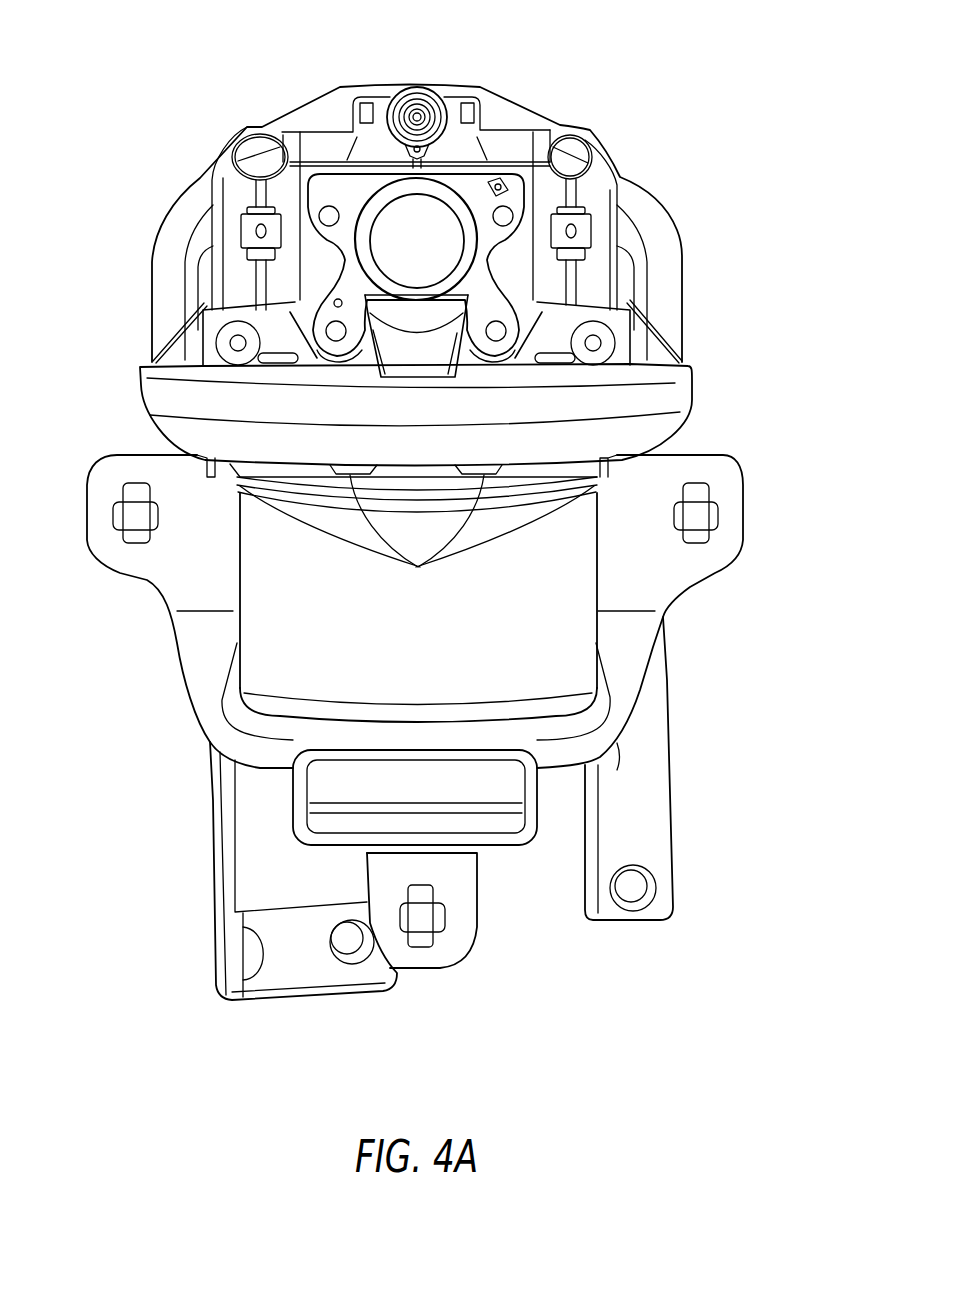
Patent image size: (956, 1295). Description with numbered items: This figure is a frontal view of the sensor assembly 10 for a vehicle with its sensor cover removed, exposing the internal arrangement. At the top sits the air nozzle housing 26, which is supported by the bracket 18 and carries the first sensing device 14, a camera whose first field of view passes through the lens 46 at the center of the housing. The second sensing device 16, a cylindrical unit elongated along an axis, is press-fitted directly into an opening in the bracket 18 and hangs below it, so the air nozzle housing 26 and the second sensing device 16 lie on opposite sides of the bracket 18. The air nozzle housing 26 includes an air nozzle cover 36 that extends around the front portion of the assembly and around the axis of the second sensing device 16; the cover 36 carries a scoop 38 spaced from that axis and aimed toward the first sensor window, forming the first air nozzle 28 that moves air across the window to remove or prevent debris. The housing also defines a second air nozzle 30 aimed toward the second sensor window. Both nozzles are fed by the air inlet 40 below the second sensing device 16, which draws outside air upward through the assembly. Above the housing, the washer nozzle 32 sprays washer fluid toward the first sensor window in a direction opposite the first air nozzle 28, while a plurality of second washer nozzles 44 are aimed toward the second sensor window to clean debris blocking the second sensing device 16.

The sensor assembly 10 is at (711, 85).
The first sensing device 14 is at (477, 200).
The second sensing device 16 is at (517, 640).
The bracket 18 is at (653, 792).
The air nozzle housing 26 is at (330, 107).
The first air nozzle 28 is at (415, 305).
The second air nozzle 30 is at (590, 497).
The washer nozzle 32 is at (419, 114).
The air nozzle cover 36 is at (670, 395).
The scoop 38 is at (410, 350).
The air inlet 40 is at (490, 830).
The second washer nozzle 44 is at (417, 540).
The lens 46 is at (443, 203).